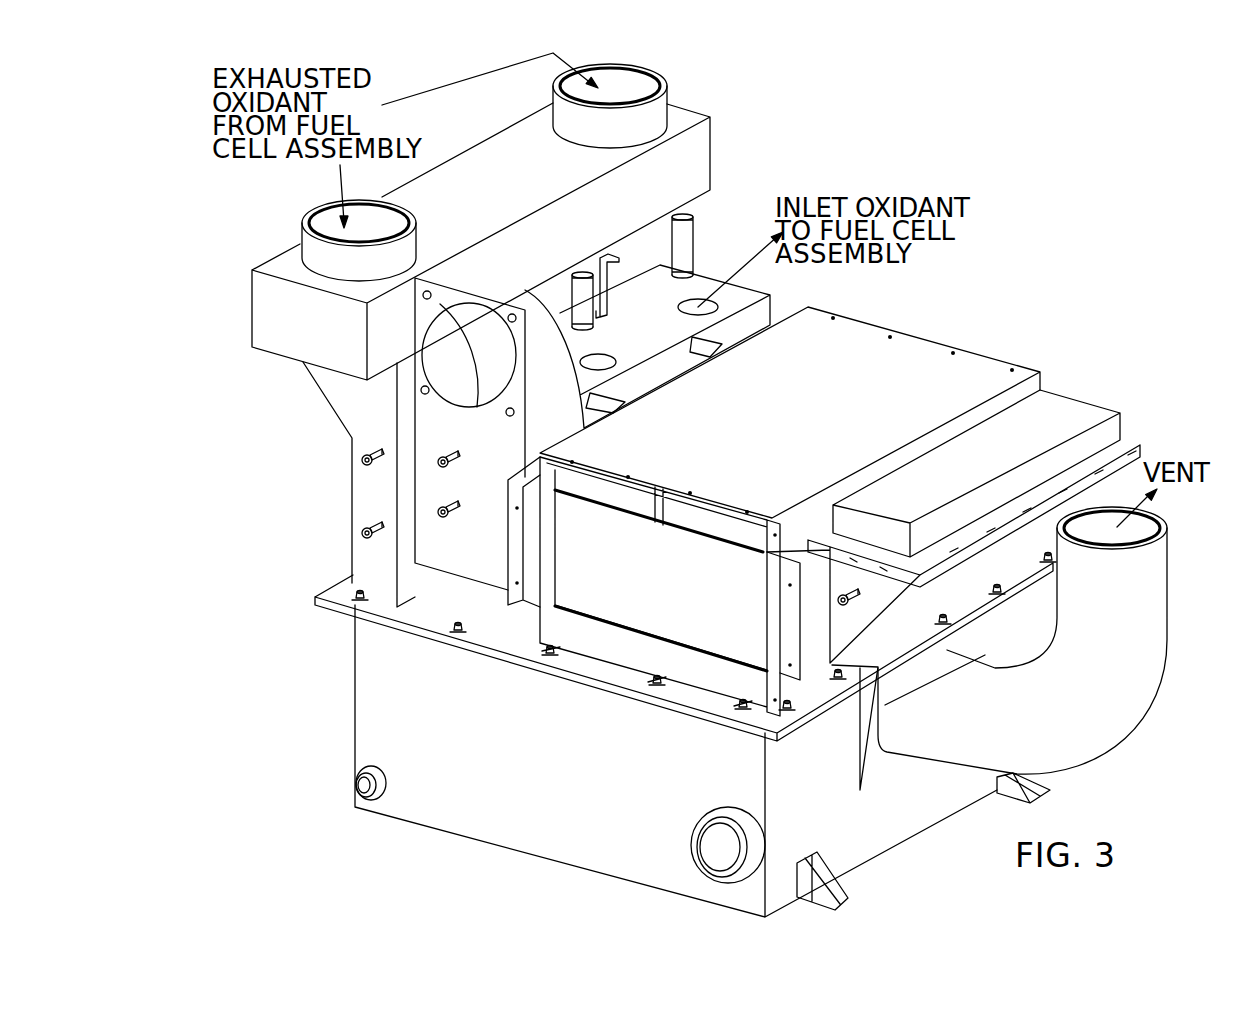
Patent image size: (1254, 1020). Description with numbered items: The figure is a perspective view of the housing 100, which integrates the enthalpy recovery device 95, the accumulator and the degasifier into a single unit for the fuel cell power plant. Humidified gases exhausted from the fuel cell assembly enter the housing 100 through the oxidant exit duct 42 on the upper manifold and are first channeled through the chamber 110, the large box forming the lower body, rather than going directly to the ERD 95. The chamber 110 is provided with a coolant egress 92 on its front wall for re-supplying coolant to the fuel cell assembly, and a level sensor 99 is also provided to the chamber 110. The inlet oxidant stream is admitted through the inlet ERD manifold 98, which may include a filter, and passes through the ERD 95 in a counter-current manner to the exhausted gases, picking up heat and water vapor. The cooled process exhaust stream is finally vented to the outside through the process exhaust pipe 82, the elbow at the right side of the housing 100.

The oxidant exit duct 42 is at (290, 262).
The process exhaust pipe 82 is at (1140, 637).
The coolant egress 92 is at (722, 842).
The enthalpy recovery device 95 is at (593, 583).
The inlet ERD manifold 98 is at (1035, 423).
The level sensor 99 is at (365, 780).
The housing 100 is at (944, 300).
The chamber 110 is at (545, 817).